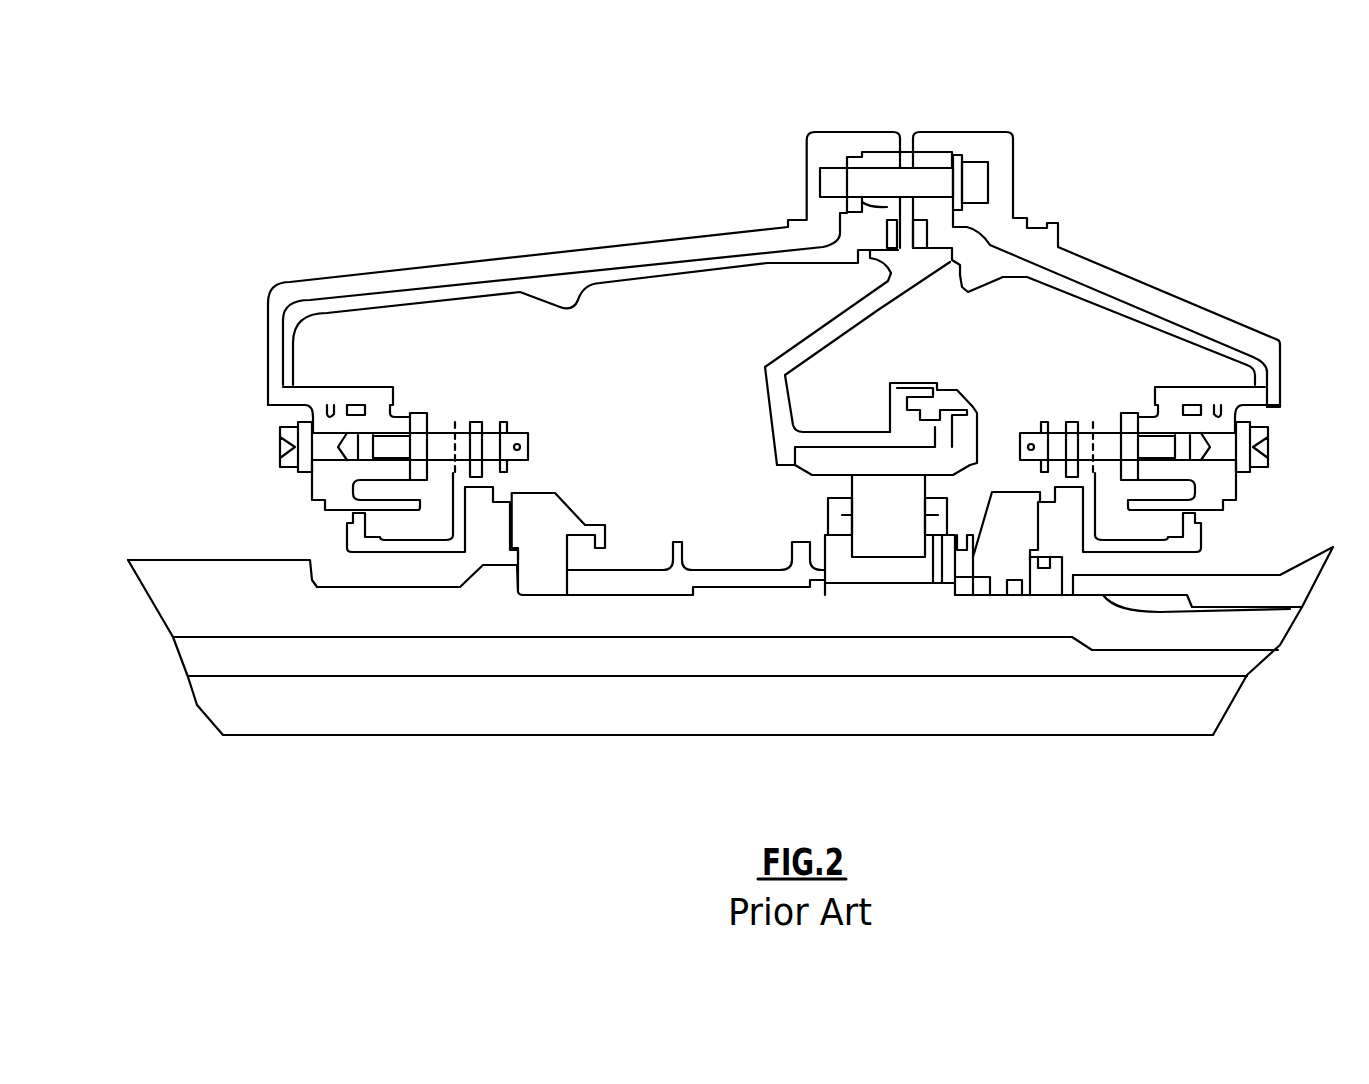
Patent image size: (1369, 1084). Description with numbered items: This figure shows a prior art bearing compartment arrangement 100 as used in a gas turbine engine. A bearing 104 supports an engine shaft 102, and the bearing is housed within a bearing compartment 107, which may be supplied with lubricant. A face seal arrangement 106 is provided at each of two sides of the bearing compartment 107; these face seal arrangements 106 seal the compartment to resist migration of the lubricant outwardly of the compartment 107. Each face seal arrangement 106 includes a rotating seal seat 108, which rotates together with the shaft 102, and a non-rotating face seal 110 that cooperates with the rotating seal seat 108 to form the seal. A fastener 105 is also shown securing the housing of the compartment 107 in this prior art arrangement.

The prior art propulsion assembly 100 is at (171, 737).
The engine shaft 102 is at (830, 615).
The bearing 104 is at (890, 520).
The fastener 105 is at (863, 233).
The face seal arrangement 106 is at (978, 502).
The bearing compartment 107 is at (805, 318).
The rotating seal seat 108 is at (547, 570).
The non-rotating face seal 110 is at (476, 421).